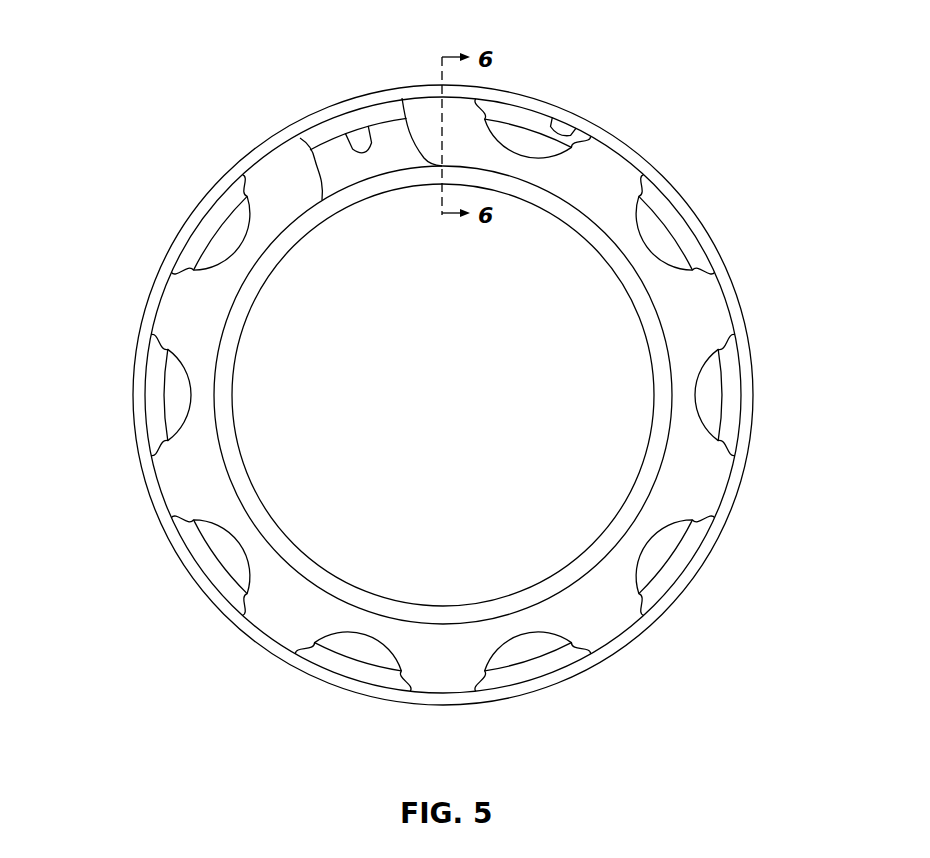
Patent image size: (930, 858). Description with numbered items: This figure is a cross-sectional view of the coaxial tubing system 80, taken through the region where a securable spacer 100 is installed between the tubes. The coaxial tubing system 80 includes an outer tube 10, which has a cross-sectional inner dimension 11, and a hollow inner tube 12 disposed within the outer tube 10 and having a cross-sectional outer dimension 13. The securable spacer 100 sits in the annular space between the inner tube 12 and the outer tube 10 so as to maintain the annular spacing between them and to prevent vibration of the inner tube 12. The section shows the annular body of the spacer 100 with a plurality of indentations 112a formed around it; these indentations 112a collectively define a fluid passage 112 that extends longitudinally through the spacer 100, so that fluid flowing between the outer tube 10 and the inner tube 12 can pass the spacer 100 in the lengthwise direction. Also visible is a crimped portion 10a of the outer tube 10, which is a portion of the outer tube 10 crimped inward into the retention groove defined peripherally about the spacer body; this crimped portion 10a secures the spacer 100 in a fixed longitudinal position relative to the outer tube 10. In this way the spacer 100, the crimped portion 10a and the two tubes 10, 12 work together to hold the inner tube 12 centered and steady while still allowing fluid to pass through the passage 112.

The outer tube 10 is at (590, 137).
The crimped portion 10a is at (340, 168).
The cross-sectional inner dimension 11 is at (577, 133).
The inner tube 12 is at (222, 411).
The cross-sectional outer dimension 13 is at (236, 461).
The coaxial tubing system 80 is at (766, 357).
The securable spacer 100 is at (690, 478).
The fluid passage 112 is at (493, 675).
The indentations 112a is at (356, 644).